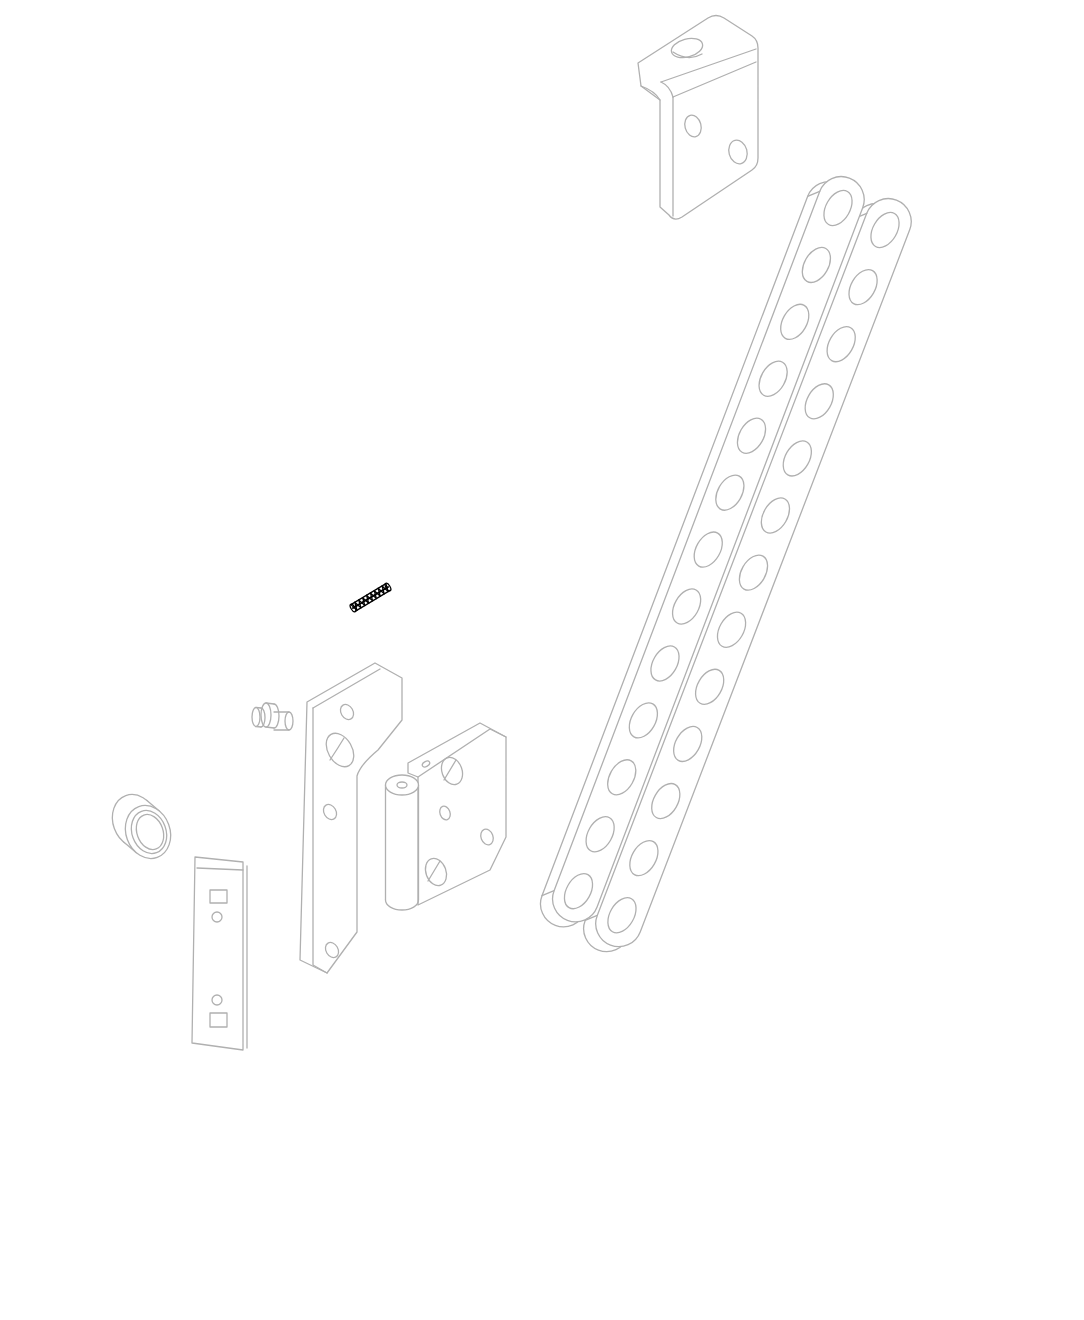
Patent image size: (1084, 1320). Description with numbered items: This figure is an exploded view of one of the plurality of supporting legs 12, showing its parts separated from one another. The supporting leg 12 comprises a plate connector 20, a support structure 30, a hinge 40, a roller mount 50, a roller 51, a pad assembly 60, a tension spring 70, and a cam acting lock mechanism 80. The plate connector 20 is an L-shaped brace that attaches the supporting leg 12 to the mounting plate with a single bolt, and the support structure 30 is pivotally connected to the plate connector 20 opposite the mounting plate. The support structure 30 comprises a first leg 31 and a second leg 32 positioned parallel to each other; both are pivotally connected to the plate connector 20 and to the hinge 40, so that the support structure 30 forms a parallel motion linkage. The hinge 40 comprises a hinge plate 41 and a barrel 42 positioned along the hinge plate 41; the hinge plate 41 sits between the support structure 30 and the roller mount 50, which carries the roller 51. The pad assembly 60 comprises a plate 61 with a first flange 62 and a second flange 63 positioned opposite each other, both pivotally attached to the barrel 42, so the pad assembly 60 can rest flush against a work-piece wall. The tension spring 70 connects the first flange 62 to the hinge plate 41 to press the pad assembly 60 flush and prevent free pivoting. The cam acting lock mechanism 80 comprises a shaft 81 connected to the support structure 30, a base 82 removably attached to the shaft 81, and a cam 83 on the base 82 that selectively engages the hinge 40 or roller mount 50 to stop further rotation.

The supporting leg 12 is at (282, 59).
The plate connector 20 is at (652, 65).
The support structure 30 is at (624, 364).
The first leg 31 is at (713, 463).
The second leg 32 is at (772, 550).
The hinge 40 is at (466, 630).
The hinge plate 41 is at (470, 735).
The barrel 42 is at (400, 895).
The roller mount 50 is at (331, 965).
The roller 51 is at (158, 822).
The pad assembly 60 is at (222, 1079).
The plate 61 is at (200, 962).
The first flange 62 is at (210, 899).
The second flange 63 is at (208, 1020).
The tension spring 70 is at (375, 592).
The cam acting lock mechanism 80 is at (211, 619).
The shaft 81 is at (284, 712).
The base 82 is at (278, 709).
The cam 83 is at (257, 707).